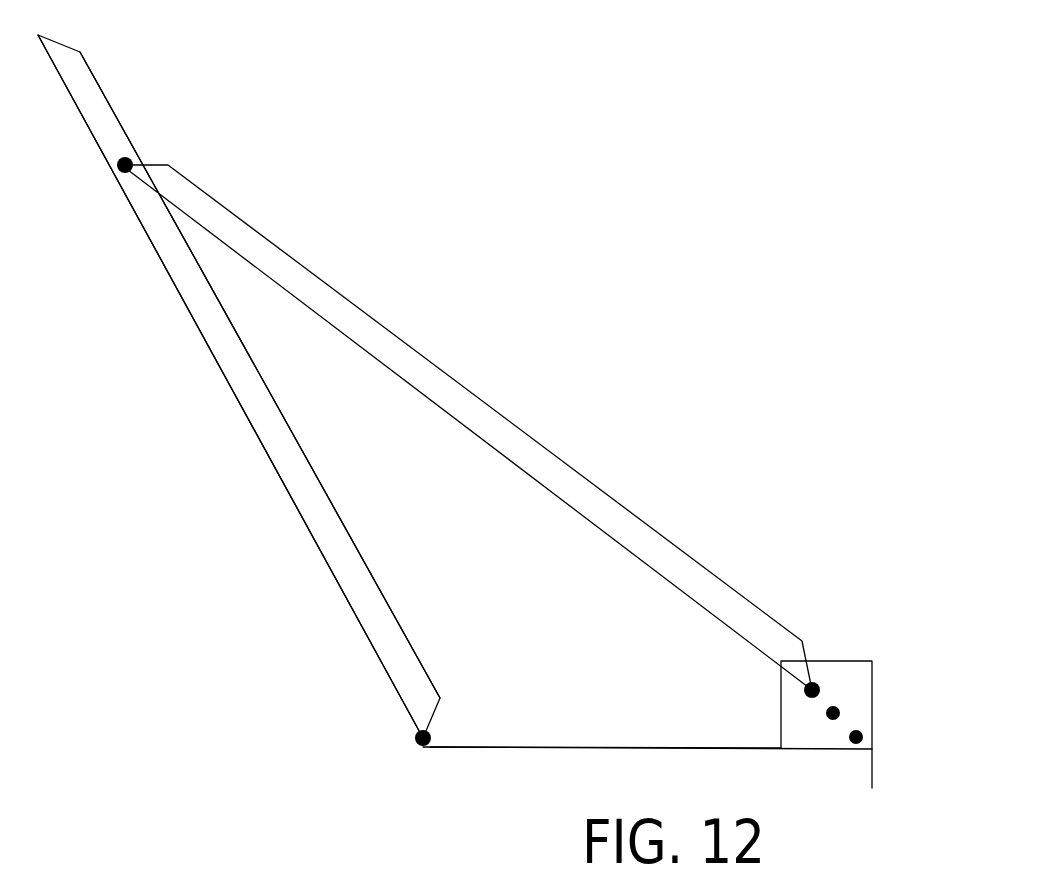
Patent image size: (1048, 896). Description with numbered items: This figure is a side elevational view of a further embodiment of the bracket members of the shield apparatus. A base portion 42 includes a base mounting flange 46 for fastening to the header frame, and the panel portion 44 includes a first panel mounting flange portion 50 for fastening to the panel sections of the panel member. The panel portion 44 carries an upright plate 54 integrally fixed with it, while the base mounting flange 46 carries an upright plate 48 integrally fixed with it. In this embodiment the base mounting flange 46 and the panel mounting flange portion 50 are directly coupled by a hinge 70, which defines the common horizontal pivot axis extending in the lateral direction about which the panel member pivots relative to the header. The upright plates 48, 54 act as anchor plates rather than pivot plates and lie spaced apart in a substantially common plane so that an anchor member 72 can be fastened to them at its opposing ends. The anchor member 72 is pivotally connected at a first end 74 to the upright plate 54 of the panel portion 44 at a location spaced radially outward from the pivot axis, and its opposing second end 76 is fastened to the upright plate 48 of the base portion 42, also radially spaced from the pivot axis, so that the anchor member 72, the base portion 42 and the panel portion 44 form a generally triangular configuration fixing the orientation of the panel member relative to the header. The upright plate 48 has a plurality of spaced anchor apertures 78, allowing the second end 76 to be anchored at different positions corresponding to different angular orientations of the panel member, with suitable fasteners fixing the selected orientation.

The base portion 42 is at (523, 748).
The panel portion 44 is at (297, 493).
The base mounting flange 46 is at (667, 748).
The upright plate 48 is at (852, 682).
The first panel mounting flange portion 50 is at (225, 385).
The upright plate 54 is at (277, 428).
The hinge 70 is at (422, 750).
The anchor member 72 is at (533, 448).
The first end 74 is at (130, 160).
The second end 76 is at (812, 686).
The bracket fastener 78 is at (833, 718).